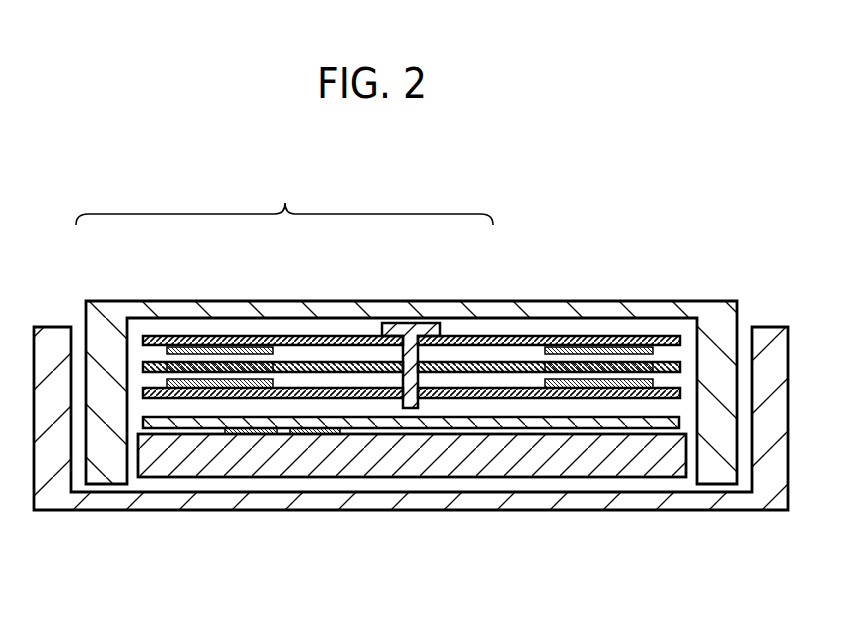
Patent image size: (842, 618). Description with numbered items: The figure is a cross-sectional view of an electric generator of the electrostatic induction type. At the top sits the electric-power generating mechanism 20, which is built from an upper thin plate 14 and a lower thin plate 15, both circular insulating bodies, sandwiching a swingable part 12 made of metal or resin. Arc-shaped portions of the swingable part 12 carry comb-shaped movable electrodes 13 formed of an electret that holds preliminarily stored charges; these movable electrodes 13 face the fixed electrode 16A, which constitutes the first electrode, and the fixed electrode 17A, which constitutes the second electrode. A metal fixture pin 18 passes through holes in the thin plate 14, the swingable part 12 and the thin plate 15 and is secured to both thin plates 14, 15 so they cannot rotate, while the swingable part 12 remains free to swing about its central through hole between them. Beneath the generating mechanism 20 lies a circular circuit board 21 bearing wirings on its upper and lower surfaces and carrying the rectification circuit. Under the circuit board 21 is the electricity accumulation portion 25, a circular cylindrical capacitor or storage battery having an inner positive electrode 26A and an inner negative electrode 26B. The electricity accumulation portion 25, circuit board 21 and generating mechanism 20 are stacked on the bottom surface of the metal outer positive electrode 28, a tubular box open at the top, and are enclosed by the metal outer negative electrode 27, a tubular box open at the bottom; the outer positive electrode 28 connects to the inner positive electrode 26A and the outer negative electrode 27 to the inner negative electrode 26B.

The electric-power generating mechanism 20 is at (284, 198).
The fixed electrode 17A is at (182, 384).
The fixed electrode 16A is at (203, 350).
The movable electrode 13 is at (252, 367).
The thin plate 14 is at (312, 340).
The swingable part 12 is at (363, 365).
The thin plate 15 is at (445, 395).
The outer negative electrode 27 is at (547, 310).
The circuit board 21 is at (193, 423).
The inner positive electrode 26A is at (253, 432).
The inner negative electrode 26B is at (317, 432).
The fixture pin 18 is at (412, 403).
The electricity accumulation portion 25 is at (543, 470).
The outer positive electrode 28 is at (727, 500).